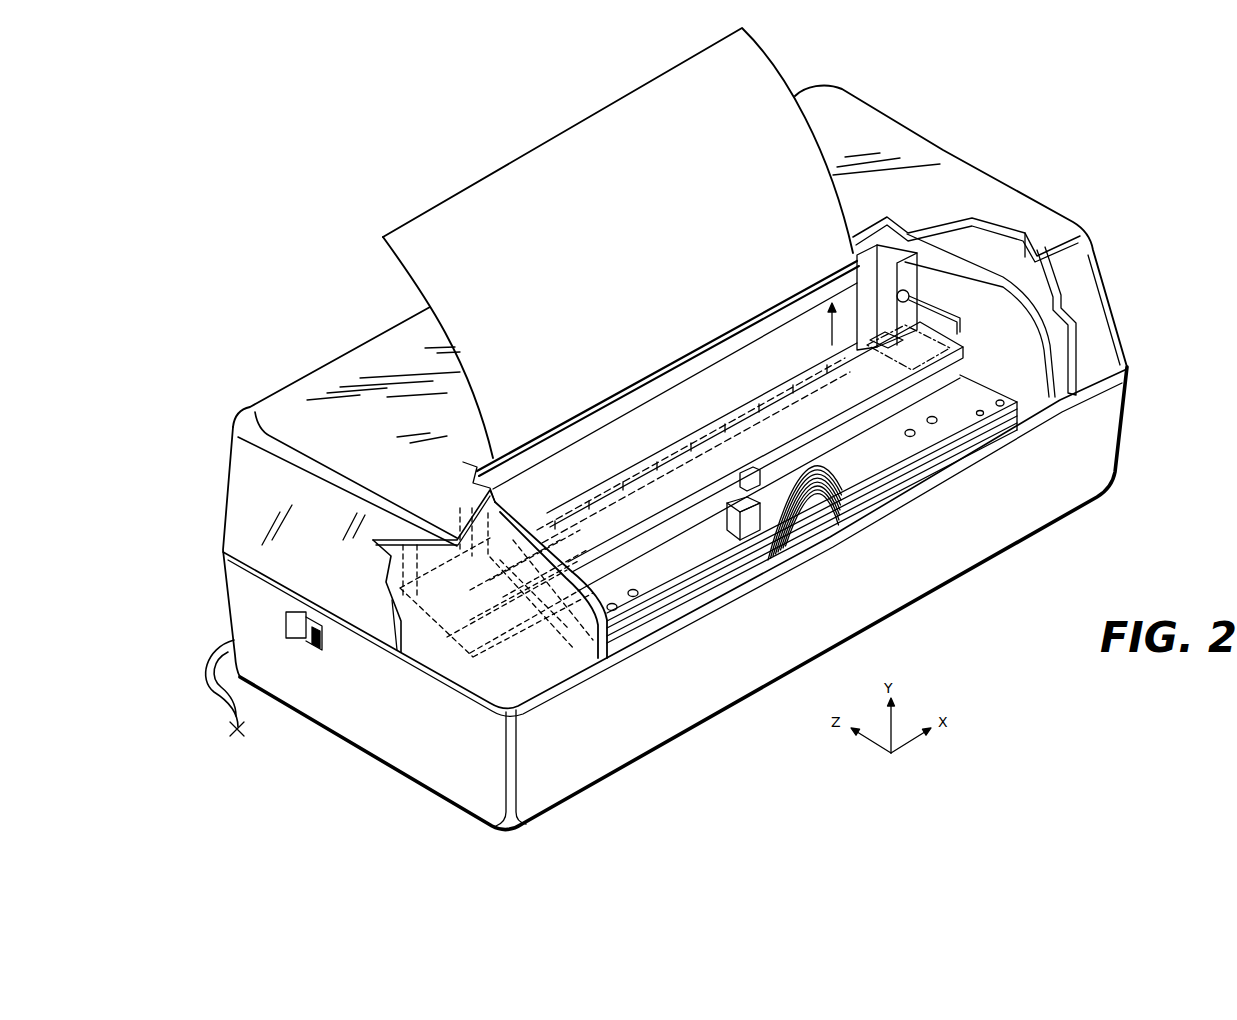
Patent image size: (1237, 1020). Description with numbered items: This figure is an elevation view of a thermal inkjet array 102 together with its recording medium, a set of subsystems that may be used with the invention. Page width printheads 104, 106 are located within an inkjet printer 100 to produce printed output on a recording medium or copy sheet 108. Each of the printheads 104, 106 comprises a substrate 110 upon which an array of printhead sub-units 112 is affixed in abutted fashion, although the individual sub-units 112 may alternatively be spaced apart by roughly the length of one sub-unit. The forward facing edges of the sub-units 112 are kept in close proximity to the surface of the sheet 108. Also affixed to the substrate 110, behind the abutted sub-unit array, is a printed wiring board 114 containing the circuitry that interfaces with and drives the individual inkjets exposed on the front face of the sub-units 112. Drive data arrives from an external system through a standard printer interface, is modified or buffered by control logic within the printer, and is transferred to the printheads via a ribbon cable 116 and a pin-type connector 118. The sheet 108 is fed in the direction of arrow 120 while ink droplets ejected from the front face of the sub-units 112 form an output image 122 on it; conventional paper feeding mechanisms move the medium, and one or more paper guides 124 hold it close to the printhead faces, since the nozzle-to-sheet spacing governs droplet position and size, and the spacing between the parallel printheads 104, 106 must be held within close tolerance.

The inkjet printer 100 is at (282, 380).
The thermal inkjet array 102 is at (953, 300).
The page width printhead 104 is at (910, 397).
The page width printhead 106 is at (478, 697).
The recording medium or copy sheet 108 is at (540, 193).
The substrate 110 is at (983, 400).
The printhead sub-unit 112 is at (645, 508).
The printed wiring board 114 is at (843, 462).
The ribbon cable 116 is at (828, 528).
The pin-type connector 118 is at (737, 517).
The arrow 120 is at (836, 345).
The output image 122 is at (722, 387).
The paper guide 124 is at (585, 425).